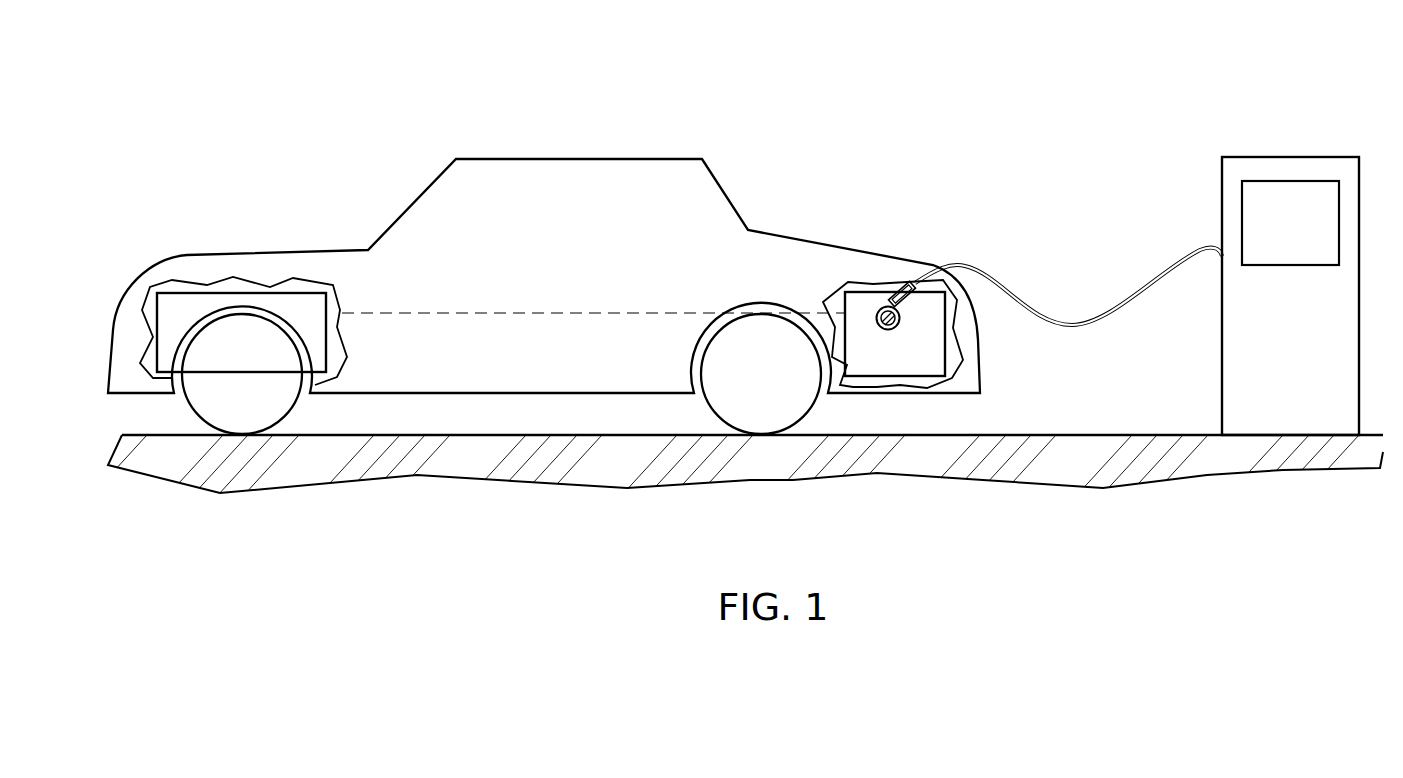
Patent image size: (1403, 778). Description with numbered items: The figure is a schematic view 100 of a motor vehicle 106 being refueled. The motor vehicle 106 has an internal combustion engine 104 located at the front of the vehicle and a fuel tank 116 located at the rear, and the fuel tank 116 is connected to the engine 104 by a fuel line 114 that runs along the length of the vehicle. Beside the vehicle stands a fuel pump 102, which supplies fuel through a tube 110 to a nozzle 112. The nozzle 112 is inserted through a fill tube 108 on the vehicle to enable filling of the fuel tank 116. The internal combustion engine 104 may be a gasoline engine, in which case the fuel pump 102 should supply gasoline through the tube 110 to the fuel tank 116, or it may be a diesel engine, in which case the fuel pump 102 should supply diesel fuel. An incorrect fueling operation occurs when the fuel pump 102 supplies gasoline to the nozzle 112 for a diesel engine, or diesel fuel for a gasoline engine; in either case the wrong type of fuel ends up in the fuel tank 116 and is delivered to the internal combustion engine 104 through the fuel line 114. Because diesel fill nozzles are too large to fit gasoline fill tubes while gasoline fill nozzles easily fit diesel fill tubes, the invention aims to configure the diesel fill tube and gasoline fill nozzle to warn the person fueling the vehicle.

The schematic view 100 is at (345, 104).
The fuel pump 102 is at (1293, 168).
The internal combustion engine 104 is at (187, 313).
The motor vehicle 106 is at (548, 178).
The fill tube 108 is at (877, 310).
The tube 110 is at (1068, 325).
The nozzle 112 is at (904, 283).
The fuel line 114 is at (572, 313).
The fuel tank 116 is at (913, 360).